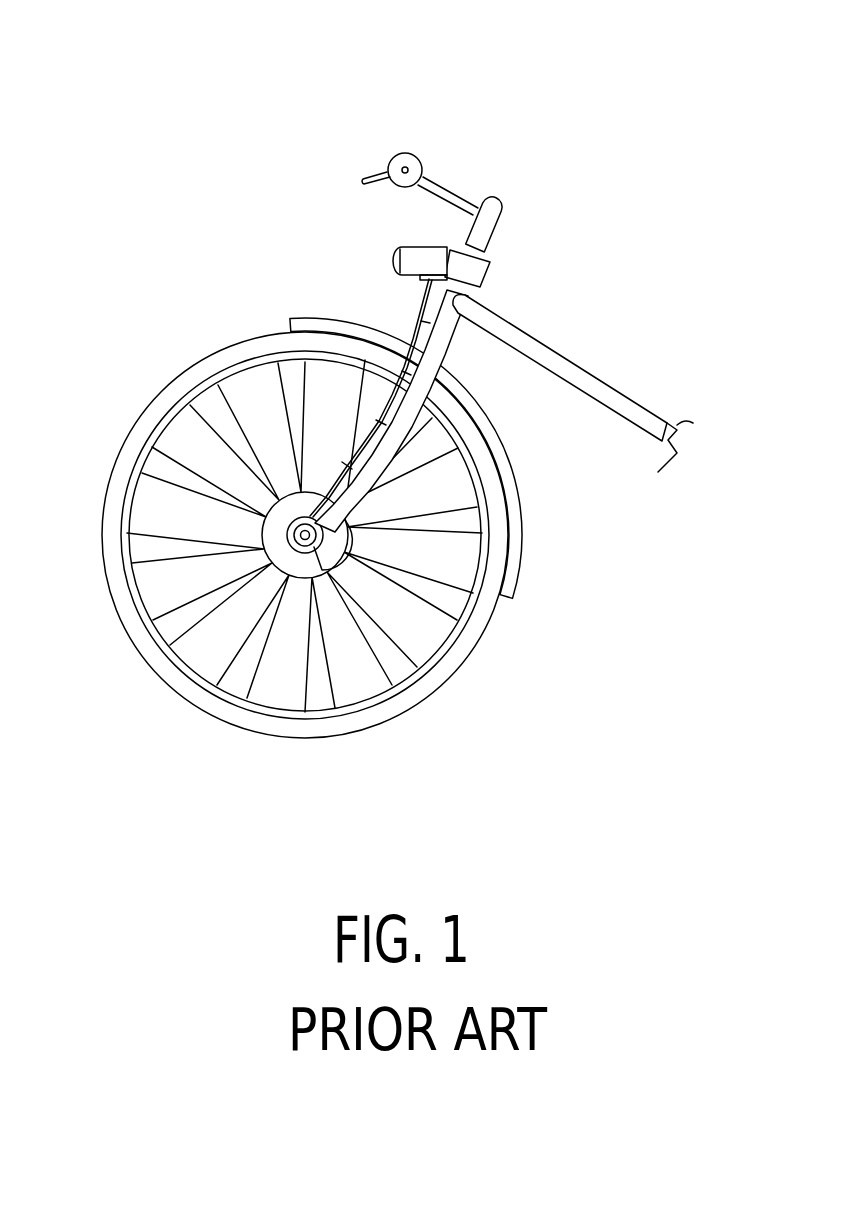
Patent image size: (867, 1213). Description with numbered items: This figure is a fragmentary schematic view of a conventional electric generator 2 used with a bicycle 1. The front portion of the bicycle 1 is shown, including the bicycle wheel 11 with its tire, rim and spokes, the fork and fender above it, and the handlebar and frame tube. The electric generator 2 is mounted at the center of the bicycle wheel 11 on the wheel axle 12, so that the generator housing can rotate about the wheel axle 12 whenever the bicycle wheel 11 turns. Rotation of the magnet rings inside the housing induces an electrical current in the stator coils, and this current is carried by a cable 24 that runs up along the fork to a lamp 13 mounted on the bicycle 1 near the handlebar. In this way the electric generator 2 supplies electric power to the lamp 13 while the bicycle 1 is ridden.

The bicycle 1 is at (472, 122).
The electric generator 2 is at (312, 572).
The bicycle wheel 11 is at (133, 436).
The wheel axle 12 is at (425, 597).
The lamp 13 is at (395, 256).
The cable 24 is at (423, 313).